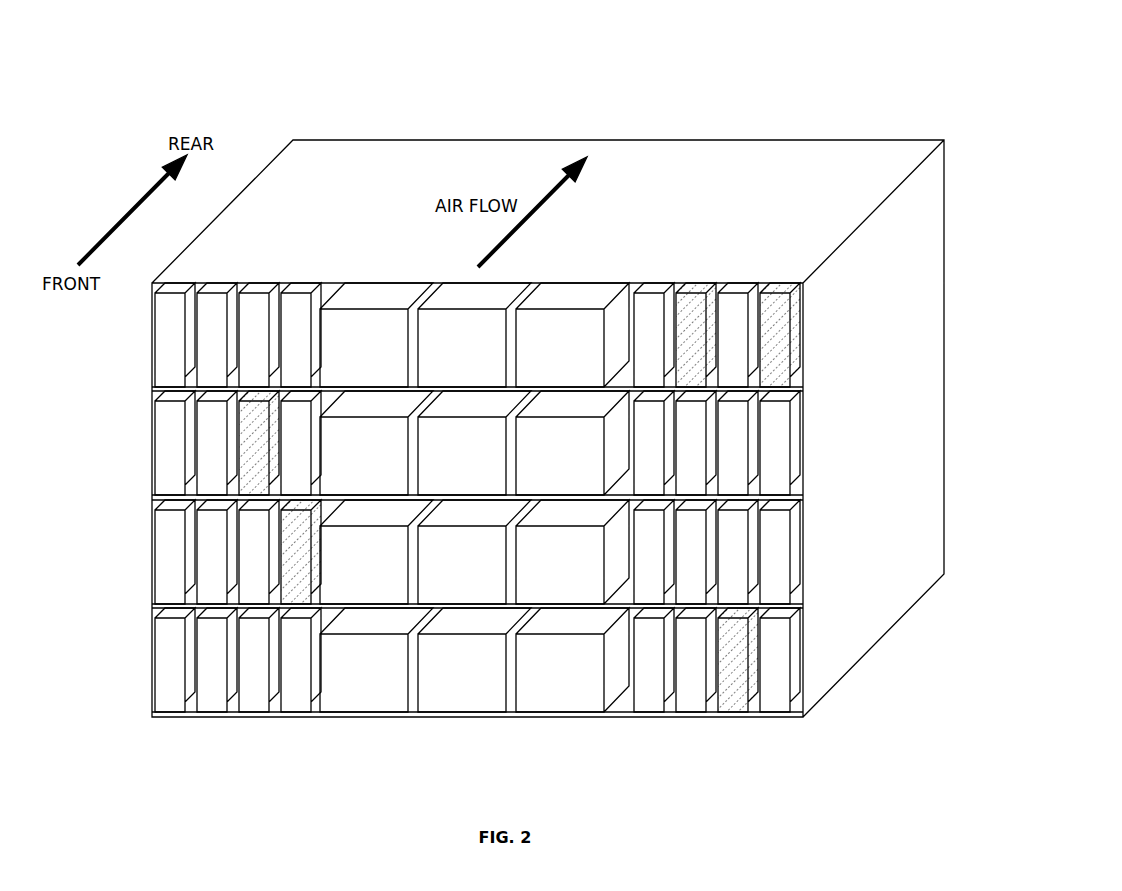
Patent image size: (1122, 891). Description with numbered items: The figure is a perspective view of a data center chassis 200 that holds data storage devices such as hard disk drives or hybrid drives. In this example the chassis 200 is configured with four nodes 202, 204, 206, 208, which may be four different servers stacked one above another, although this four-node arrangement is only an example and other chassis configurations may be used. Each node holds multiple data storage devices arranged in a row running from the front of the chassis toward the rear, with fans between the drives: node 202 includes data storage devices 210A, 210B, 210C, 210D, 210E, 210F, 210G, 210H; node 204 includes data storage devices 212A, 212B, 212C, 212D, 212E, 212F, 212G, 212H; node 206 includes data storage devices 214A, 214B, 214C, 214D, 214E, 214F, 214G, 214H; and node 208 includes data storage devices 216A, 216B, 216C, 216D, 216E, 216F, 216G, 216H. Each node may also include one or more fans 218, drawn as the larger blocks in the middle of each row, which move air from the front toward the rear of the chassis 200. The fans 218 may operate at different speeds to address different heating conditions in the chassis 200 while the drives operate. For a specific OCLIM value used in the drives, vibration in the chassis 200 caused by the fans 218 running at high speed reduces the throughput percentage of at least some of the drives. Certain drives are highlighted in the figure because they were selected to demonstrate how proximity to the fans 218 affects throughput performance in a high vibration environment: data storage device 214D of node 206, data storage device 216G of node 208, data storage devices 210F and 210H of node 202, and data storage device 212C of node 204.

The data center chassis 200 is at (910, 108).
The node 202 is at (126, 329).
The node 204 is at (126, 437).
The node 206 is at (126, 546).
The node 208 is at (126, 654).
The data storage device 210A is at (164, 372).
The data storage device 210B is at (206, 372).
The data storage device 210C is at (248, 372).
The data storage device 210D is at (290, 372).
The data storage device 210E is at (643, 372).
The data storage device 210F is at (685, 372).
The data storage device 210G is at (727, 372).
The data storage device 210H is at (769, 372).
The data storage device 212A is at (164, 480).
The data storage device 212B is at (206, 480).
The data storage device 212C is at (248, 480).
The data storage device 212D is at (290, 480).
The data storage device 212E is at (643, 480).
The data storage device 212F is at (685, 480).
The data storage device 212G is at (727, 480).
The data storage device 212H is at (769, 480).
The data storage device 214A is at (164, 589).
The data storage device 214B is at (206, 589).
The data storage device 214C is at (248, 589).
The data storage device 214D is at (290, 589).
The data storage device 214E is at (643, 589).
The data storage device 214F is at (685, 589).
The data storage device 214G is at (727, 589).
The data storage device 214H is at (769, 589).
The data storage device 216A is at (164, 697).
The data storage device 216B is at (206, 697).
The data storage device 216C is at (248, 697).
The data storage device 216D is at (290, 697).
The data storage device 216E is at (643, 697).
The data storage device 216F is at (685, 697).
The data storage device 216G is at (727, 697).
The data storage device 216H is at (769, 697).
The fan 218 is at (440, 690).